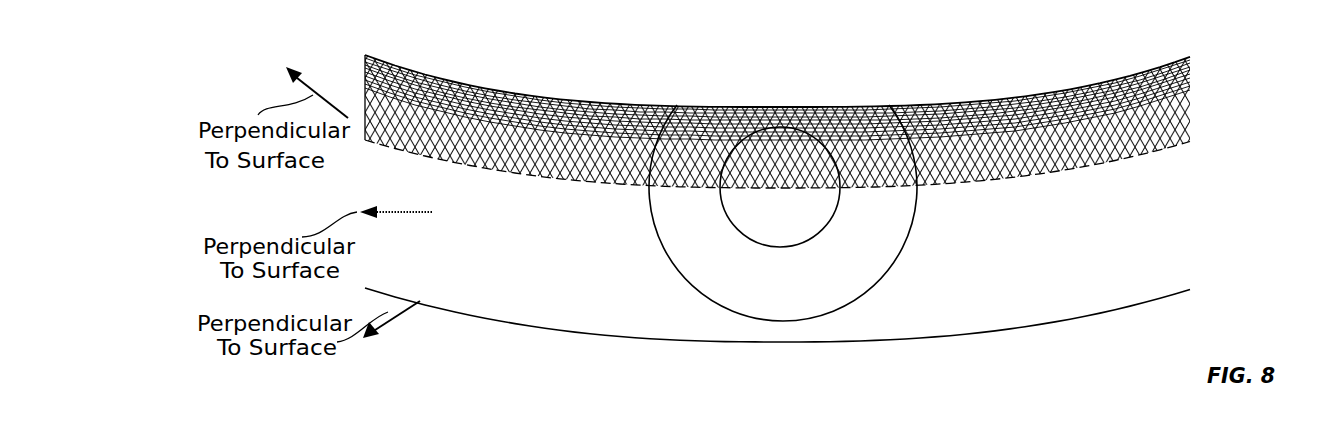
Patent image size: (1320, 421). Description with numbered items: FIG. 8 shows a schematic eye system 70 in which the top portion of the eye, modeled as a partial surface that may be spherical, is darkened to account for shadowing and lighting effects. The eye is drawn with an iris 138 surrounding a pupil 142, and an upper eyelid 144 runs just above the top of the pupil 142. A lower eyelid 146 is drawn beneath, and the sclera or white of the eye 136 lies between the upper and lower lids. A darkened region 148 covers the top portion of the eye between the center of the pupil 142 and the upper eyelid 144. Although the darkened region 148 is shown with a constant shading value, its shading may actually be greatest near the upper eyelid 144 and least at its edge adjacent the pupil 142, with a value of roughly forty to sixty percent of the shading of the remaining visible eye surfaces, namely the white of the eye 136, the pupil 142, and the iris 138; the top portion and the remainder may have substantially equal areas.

The system 70 is at (510, 44).
The white of the eye 136 is at (1030, 250).
The iris 138 is at (650, 212).
The pupil 142 is at (746, 237).
The upper eyelid 144 is at (531, 98).
The lower eyelid 146 is at (458, 317).
The darkened region 148 is at (1243, 127).